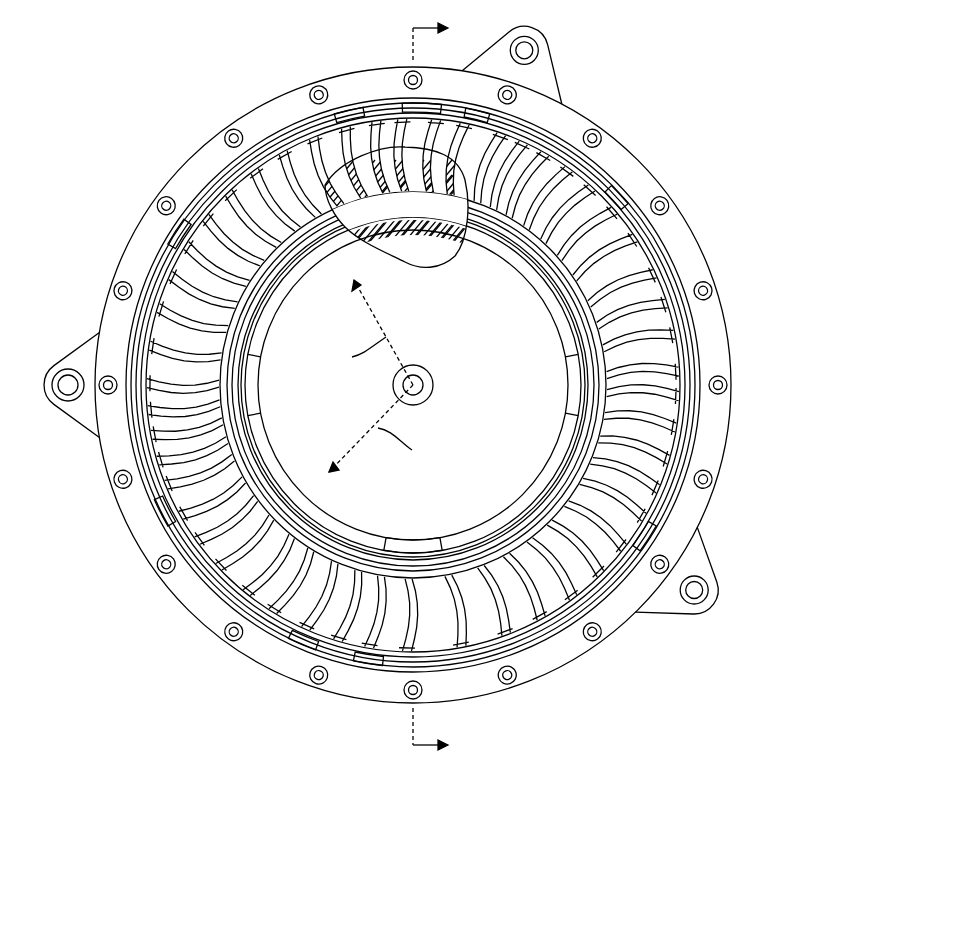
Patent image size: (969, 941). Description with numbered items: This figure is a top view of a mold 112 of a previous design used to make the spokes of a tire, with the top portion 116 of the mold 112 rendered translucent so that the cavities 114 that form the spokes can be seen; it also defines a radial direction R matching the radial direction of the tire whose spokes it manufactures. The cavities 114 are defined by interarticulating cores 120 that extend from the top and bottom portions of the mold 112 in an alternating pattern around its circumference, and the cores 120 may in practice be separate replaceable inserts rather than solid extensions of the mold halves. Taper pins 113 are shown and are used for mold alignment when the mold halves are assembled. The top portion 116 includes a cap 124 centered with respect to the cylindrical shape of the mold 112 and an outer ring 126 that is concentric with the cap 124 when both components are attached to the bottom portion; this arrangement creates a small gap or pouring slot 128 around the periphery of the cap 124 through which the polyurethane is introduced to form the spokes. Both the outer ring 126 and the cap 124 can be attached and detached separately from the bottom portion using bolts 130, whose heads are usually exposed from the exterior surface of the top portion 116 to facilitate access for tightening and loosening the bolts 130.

The mold 112 is at (604, 86).
The taper pins 113 is at (540, 50).
The cavities 114 is at (284, 178).
The top portion 116 is at (731, 420).
The cores 120 is at (576, 586).
The cap 124 is at (502, 345).
The outer ring 126 is at (608, 582).
The pouring slot 128 is at (664, 488).
The bolts 130 is at (166, 202).